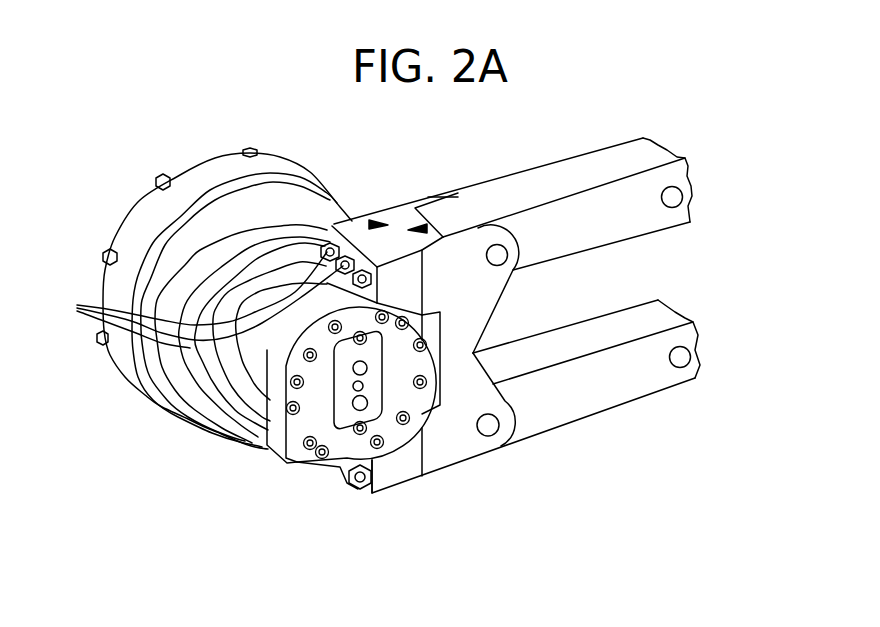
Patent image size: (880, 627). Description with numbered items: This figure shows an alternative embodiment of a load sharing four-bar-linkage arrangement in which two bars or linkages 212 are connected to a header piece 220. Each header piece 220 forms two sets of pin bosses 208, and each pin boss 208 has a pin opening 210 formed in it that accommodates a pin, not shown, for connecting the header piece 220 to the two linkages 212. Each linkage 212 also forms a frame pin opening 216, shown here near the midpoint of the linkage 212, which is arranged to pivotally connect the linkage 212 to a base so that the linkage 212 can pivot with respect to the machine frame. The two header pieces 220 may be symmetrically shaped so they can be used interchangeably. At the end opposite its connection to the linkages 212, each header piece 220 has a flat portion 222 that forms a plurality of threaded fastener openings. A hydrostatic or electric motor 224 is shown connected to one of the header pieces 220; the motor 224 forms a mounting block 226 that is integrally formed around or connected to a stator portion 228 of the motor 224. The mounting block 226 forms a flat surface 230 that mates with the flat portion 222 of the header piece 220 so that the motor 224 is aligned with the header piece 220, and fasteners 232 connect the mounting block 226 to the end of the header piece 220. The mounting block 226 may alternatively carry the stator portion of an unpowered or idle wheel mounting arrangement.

The pin boss 208 is at (505, 270).
The pin opening 210 is at (508, 256).
The linkage 212 is at (620, 165).
The frame pin opening 216 is at (679, 198).
The header piece 220 is at (450, 455).
The flat portion 222 is at (350, 215).
The hydrostatic or electric motor 224 is at (132, 194).
The mounting block 226 is at (382, 475).
The stator portion 228 is at (285, 444).
The flat surface 230 is at (440, 225).
The fasteners 232 is at (77, 311).